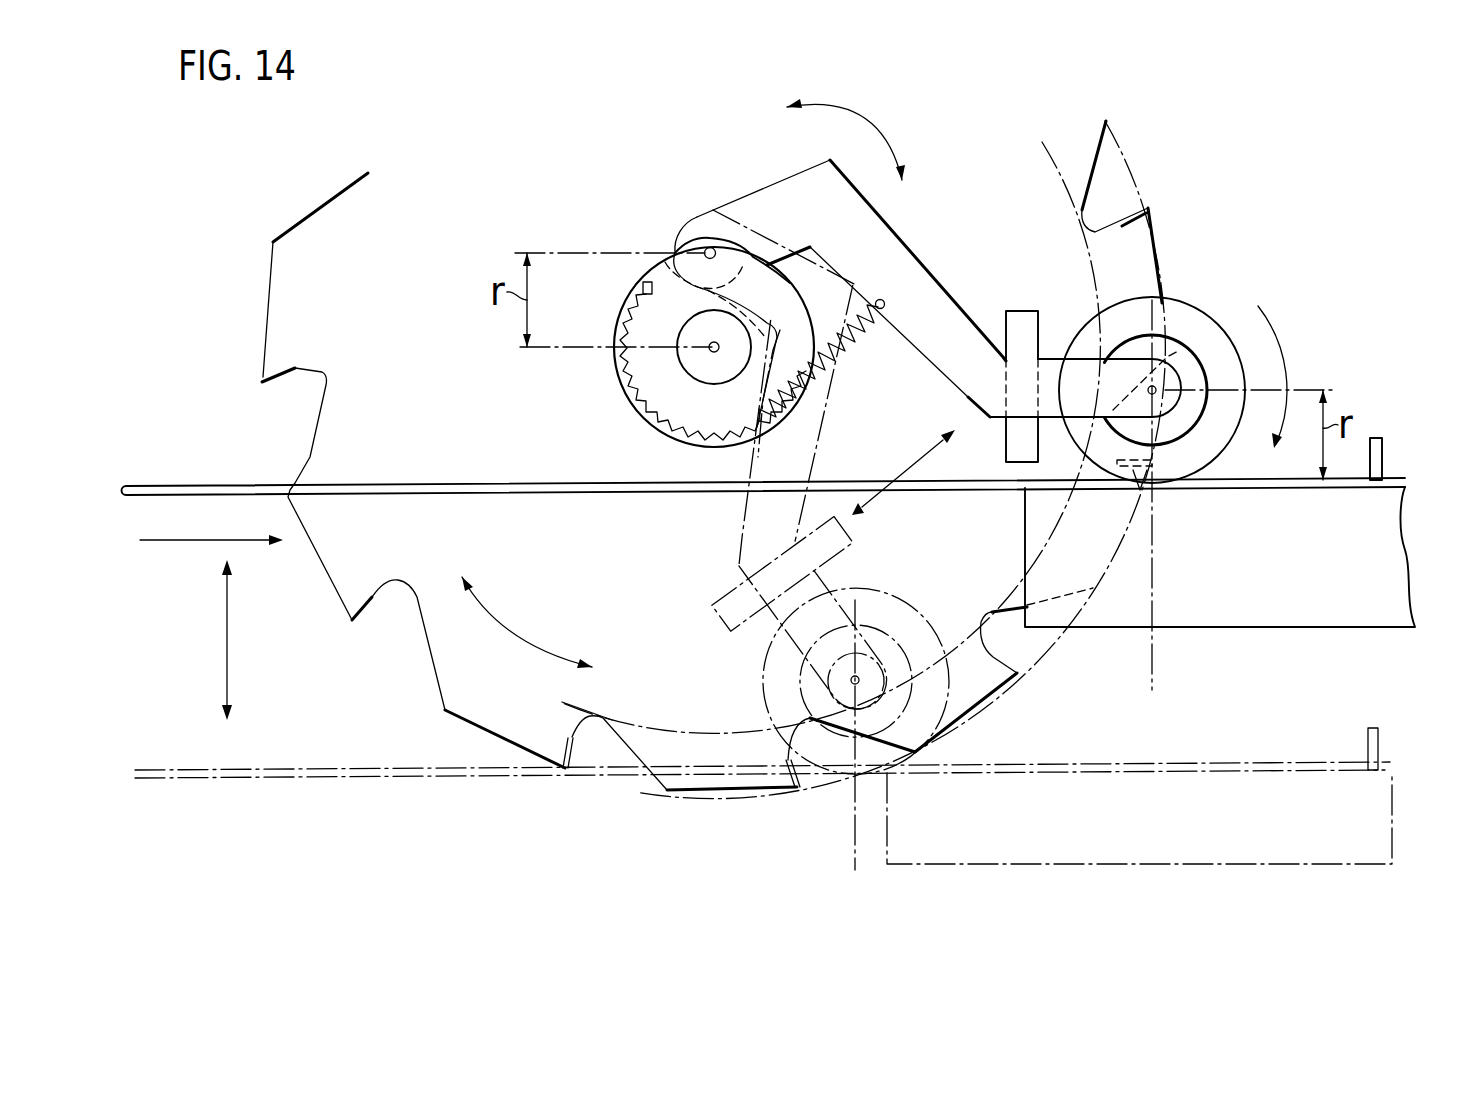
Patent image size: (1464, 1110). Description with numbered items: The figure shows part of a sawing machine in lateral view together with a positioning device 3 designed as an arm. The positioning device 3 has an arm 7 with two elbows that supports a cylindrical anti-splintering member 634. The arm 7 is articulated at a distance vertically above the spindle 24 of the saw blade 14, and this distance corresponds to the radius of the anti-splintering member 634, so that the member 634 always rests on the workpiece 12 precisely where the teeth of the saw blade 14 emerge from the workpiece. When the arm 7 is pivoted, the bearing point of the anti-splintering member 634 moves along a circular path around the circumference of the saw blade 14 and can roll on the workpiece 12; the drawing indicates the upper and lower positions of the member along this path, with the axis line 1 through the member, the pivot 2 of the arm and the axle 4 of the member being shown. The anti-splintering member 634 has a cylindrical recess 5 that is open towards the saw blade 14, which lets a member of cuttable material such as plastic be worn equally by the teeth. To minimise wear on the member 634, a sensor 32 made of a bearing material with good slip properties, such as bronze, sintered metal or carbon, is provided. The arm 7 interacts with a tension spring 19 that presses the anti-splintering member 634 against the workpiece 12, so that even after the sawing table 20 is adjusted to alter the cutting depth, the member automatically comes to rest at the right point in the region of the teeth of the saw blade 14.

The axis / position line of roller 1 is at (1155, 668).
The pivot of lever 2 is at (707, 247).
The positioning device 3 is at (905, 238).
The roller axle 4 is at (1154, 390).
The cylindrical recess 5 is at (1183, 352).
The arm 7 is at (783, 195).
The workpiece 12 is at (1398, 556).
The saw blade 14 is at (345, 218).
The tension spring 19 is at (858, 352).
The sawing table 20 is at (1385, 455).
The spindle 24 is at (702, 358).
The sensor 32 is at (1018, 306).
The cylindrical anti-splintering member 634 is at (1187, 308).